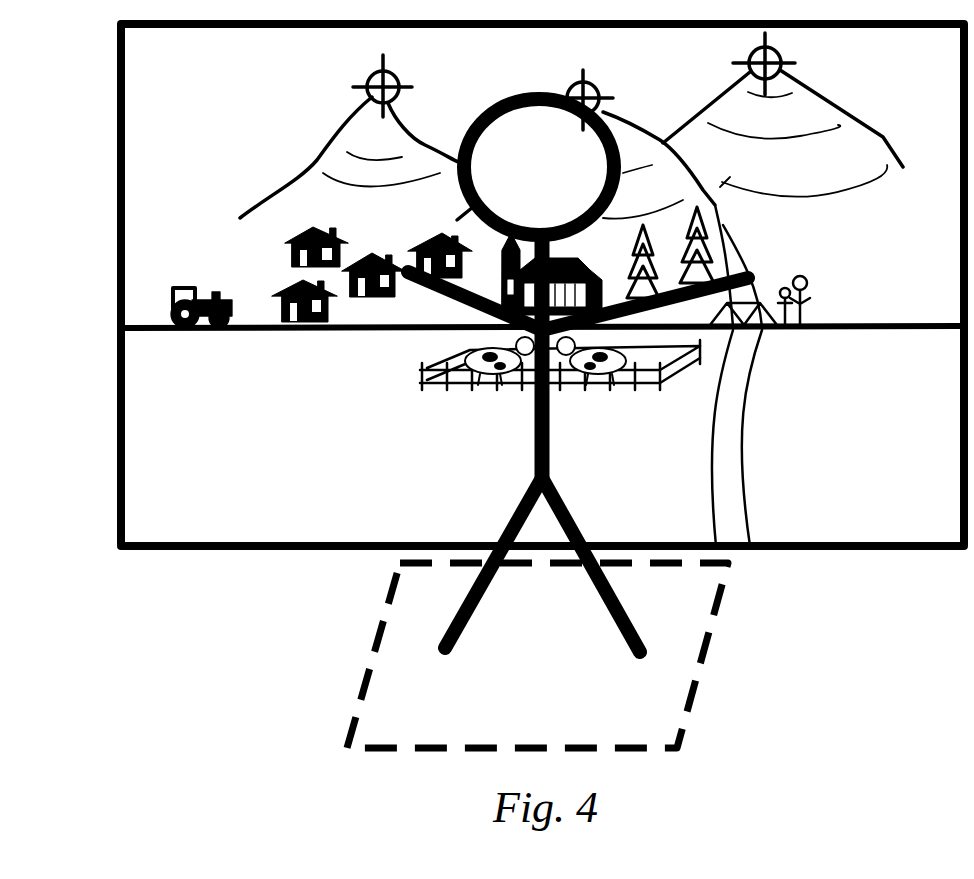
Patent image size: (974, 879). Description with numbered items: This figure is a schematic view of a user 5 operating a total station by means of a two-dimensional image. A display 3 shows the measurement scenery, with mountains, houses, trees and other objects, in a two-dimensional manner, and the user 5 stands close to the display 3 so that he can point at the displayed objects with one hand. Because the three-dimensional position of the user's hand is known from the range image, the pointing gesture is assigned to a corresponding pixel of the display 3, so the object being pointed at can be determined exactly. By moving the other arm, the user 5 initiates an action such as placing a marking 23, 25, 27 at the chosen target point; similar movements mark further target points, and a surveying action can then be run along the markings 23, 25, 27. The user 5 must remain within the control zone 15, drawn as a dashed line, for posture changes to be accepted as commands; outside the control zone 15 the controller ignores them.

The display 3 is at (178, 257).
The user 5 is at (533, 445).
The control zone 15 is at (675, 658).
The marking 23 is at (364, 87).
The marking 25 is at (572, 99).
The marking 27 is at (783, 68).